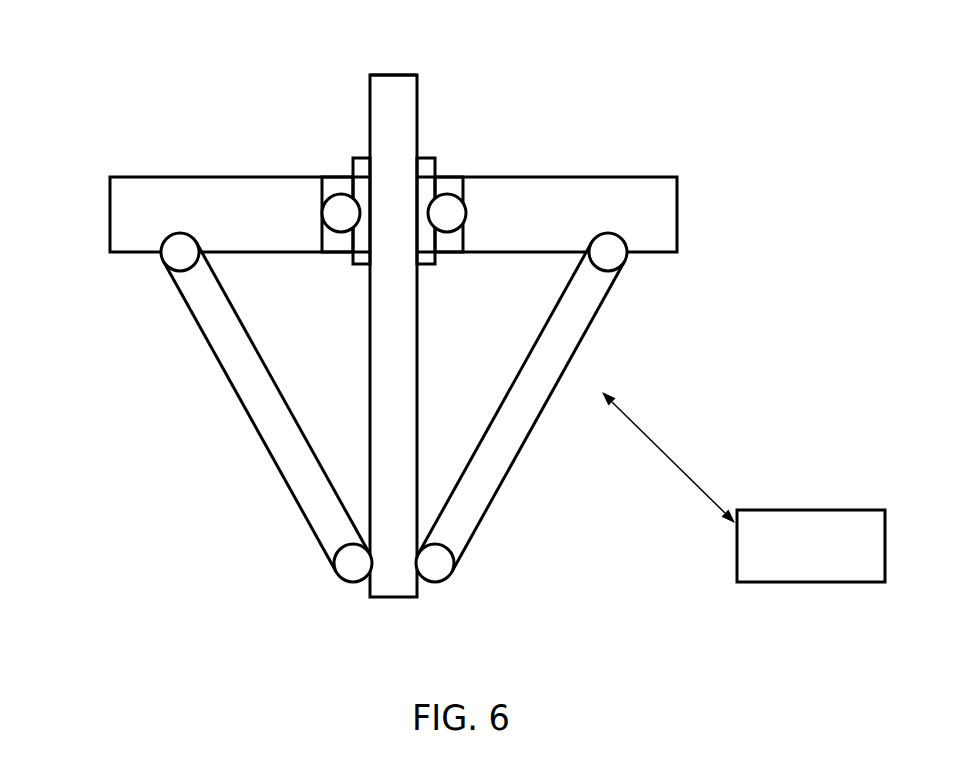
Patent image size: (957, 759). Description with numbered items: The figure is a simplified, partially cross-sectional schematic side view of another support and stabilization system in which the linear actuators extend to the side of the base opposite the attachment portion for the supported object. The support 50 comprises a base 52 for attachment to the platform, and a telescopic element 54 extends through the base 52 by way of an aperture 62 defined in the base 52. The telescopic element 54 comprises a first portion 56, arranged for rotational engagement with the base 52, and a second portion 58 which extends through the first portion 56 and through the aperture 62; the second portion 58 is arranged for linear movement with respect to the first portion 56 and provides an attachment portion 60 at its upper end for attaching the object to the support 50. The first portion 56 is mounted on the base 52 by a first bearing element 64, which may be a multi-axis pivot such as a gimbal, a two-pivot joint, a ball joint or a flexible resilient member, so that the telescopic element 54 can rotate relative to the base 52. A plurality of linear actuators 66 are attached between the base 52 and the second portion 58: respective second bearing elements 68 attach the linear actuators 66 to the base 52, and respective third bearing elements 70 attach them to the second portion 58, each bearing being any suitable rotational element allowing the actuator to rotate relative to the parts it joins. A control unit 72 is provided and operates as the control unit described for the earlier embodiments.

The support 50 is at (96, 93).
The base 52 is at (110, 210).
The telescopic element 54 is at (294, 82).
The first portion 56 is at (427, 158).
The second portion 58 is at (407, 95).
The attachment portion 60 is at (390, 75).
The aperture 62 is at (336, 186).
The first bearing element 64 is at (447, 208).
The linear actuators 66 is at (273, 430).
The second bearing elements 68 is at (172, 258).
The third bearing elements 70 is at (350, 570).
The control unit 72 is at (810, 530).